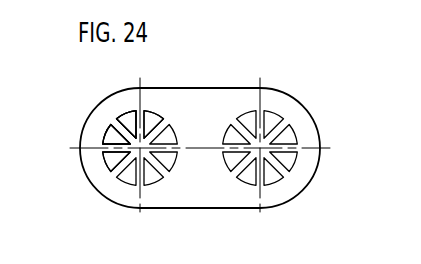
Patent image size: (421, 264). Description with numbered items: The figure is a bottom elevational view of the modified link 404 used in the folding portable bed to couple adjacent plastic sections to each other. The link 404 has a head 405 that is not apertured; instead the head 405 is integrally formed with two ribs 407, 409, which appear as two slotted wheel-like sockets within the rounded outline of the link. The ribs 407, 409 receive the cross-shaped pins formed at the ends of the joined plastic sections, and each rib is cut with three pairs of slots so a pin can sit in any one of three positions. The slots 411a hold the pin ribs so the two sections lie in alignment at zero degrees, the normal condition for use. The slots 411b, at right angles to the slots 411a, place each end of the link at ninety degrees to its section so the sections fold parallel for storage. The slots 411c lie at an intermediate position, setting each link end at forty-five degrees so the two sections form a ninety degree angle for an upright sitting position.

The link 404 is at (328, 88).
The head 405 is at (215, 108).
The rib 407 is at (118, 177).
The rib 409 is at (274, 176).
The slots 411a is at (113, 147).
The slots 411b is at (142, 118).
The slots 411c is at (113, 122).